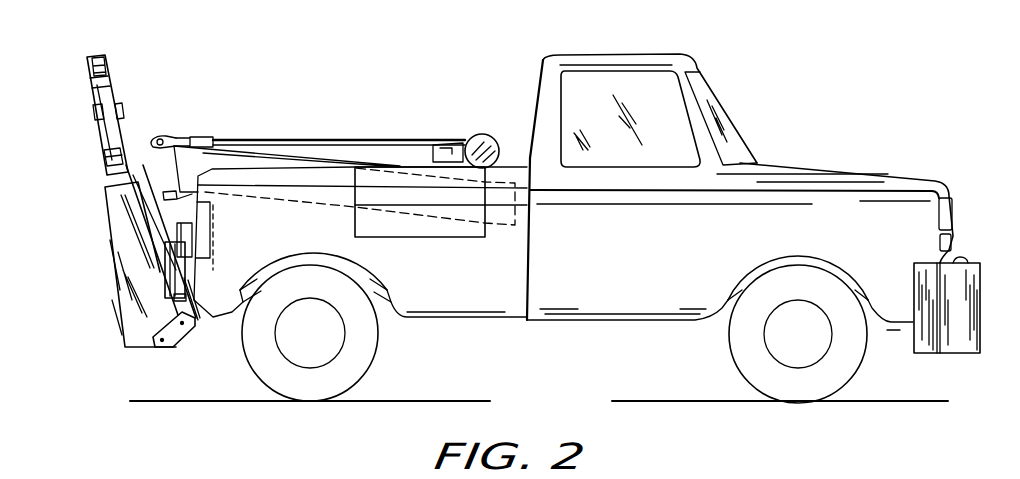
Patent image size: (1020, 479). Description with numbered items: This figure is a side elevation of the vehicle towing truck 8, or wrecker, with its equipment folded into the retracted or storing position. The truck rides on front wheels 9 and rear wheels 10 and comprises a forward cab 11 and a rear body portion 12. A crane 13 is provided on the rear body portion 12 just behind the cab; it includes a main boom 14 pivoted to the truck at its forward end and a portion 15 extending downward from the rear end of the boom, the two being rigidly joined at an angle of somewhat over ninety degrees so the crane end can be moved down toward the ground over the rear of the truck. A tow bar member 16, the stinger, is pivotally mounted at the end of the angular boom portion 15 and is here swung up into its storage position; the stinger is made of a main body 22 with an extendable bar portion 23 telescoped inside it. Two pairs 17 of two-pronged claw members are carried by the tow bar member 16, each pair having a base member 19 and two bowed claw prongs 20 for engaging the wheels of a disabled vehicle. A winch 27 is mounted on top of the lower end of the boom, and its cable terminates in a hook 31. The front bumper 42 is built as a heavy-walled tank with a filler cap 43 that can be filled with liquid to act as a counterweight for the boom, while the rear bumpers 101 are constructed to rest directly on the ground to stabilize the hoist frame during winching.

The vehicle towing truck 8 is at (557, 357).
The front wheels 9 is at (850, 377).
The rear wheels 10 is at (377, 356).
The cab 11 is at (641, 264).
The rear body portion 12 is at (461, 272).
The crane 13 is at (263, 138).
The main boom 14 is at (266, 156).
The downward boom portion 15 is at (167, 207).
The tow bar member 16 is at (73, 272).
The pairs of claw members 17 is at (70, 125).
The base member 19 is at (108, 86).
The claw prongs 20 is at (98, 53).
The main body 22 is at (118, 286).
The extendable bar portion 23 is at (105, 187).
The winch 27 is at (503, 110).
The hook 31 is at (148, 134).
The front bumper 42 is at (938, 354).
The filler cap 43 is at (960, 252).
The rear bumpers 101 is at (192, 275).